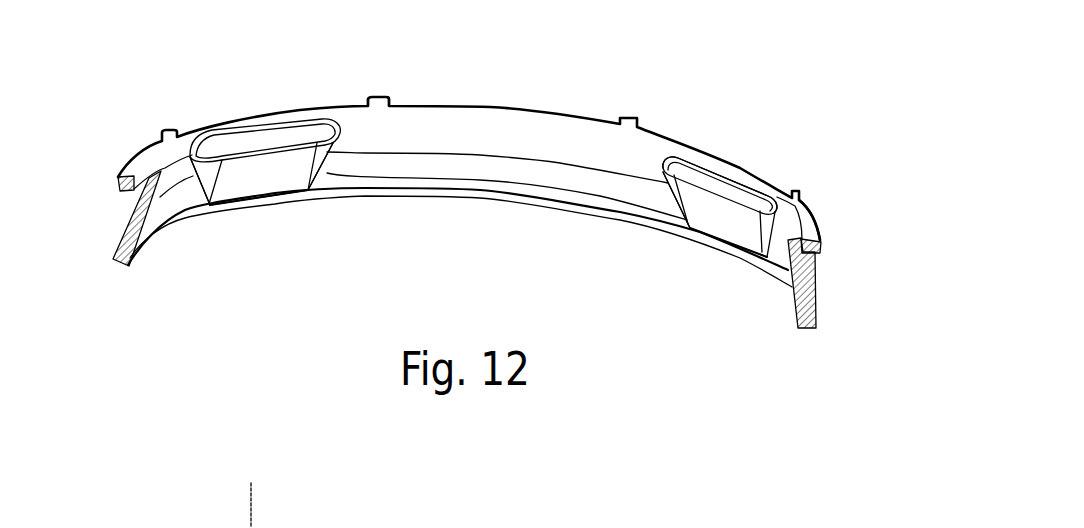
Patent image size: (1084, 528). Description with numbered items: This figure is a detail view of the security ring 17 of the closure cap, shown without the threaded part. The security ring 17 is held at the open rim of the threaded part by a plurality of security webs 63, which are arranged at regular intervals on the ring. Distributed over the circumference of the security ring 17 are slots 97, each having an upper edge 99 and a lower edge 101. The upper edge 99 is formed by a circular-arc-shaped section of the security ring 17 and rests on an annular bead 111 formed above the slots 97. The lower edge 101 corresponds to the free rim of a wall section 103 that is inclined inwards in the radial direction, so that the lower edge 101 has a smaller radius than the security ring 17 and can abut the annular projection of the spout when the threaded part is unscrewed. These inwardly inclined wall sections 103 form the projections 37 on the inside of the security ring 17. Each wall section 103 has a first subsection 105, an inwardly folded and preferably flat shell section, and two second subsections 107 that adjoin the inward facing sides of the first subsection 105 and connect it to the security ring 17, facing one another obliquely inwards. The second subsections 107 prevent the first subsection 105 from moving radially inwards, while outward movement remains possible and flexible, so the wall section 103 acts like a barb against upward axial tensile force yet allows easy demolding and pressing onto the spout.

The security ring 17 is at (487, 117).
The projection 37 is at (727, 232).
The security web 63 is at (380, 95).
The slot 97 is at (268, 138).
The upper edge 99 is at (727, 180).
The lower edge 101 is at (677, 157).
The wall section 103 is at (713, 215).
The first subsection 105 is at (268, 180).
The second subsection 107 is at (192, 210).
The annular bead 111 is at (820, 250).